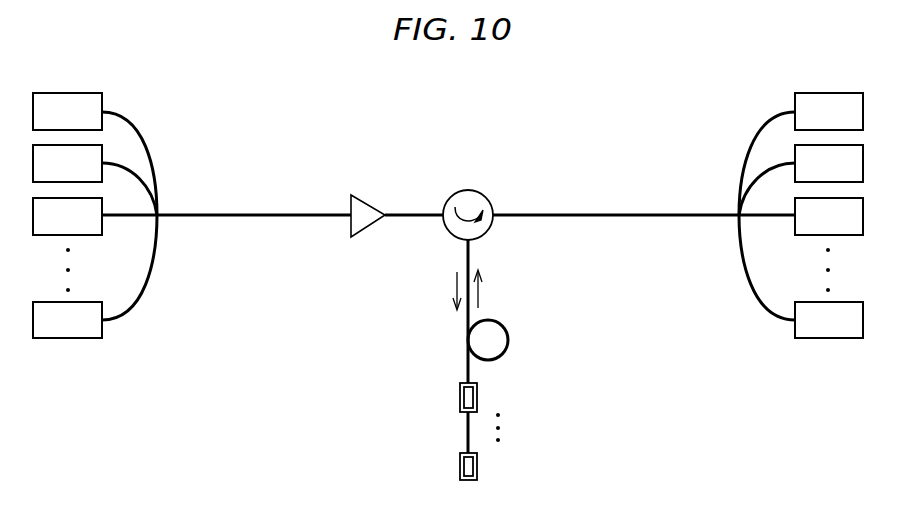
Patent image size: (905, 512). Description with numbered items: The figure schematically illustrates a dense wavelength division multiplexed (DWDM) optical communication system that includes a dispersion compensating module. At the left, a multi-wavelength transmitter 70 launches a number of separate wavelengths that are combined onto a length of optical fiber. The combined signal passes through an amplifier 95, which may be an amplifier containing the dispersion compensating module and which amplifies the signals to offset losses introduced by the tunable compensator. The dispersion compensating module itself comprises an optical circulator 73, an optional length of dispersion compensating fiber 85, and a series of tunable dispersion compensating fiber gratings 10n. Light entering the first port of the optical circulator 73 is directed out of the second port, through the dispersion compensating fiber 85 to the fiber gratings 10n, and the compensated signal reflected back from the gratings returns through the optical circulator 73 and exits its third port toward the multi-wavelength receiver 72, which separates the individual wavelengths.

The multi-wavelength transmitter 70 is at (155, 262).
The multi-wavelength receiver 72 is at (744, 274).
The optical circulator 73 is at (468, 190).
The dispersion compensating fiber (DCF) 85 is at (508, 338).
The amplifier 95 is at (362, 203).
The tunable dispersion compensating fiber gratings 10n is at (446, 420).